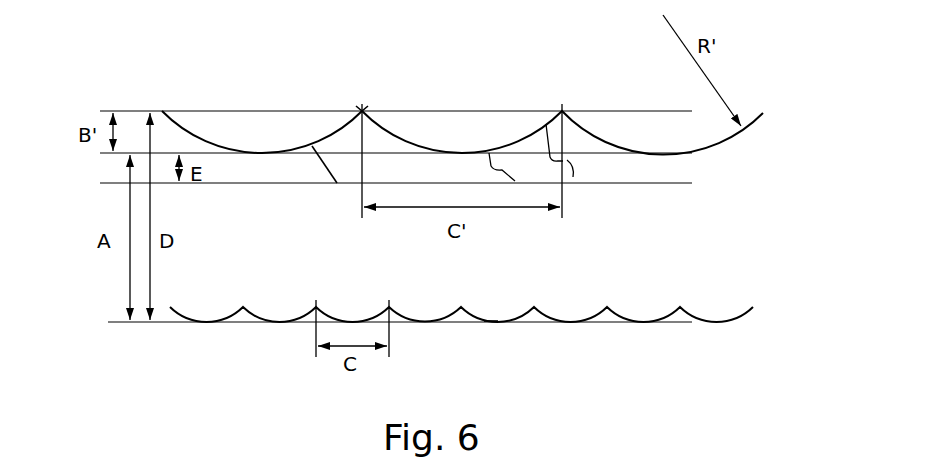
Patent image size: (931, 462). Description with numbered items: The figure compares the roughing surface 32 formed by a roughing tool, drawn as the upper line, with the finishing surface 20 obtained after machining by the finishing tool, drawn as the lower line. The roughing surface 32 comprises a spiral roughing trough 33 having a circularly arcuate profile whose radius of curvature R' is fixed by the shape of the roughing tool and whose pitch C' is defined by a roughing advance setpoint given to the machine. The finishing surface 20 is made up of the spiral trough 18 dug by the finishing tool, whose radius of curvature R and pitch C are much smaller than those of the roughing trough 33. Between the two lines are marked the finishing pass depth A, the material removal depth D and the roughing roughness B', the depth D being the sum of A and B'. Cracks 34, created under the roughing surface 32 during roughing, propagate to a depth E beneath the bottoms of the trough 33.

The roughing surface 32 is at (411, 137).
The spiral roughing trough 33 is at (389, 99).
The cracks 34 is at (323, 168).
The spiral trough 18 is at (471, 285).
The finishing surface 20 is at (494, 318).